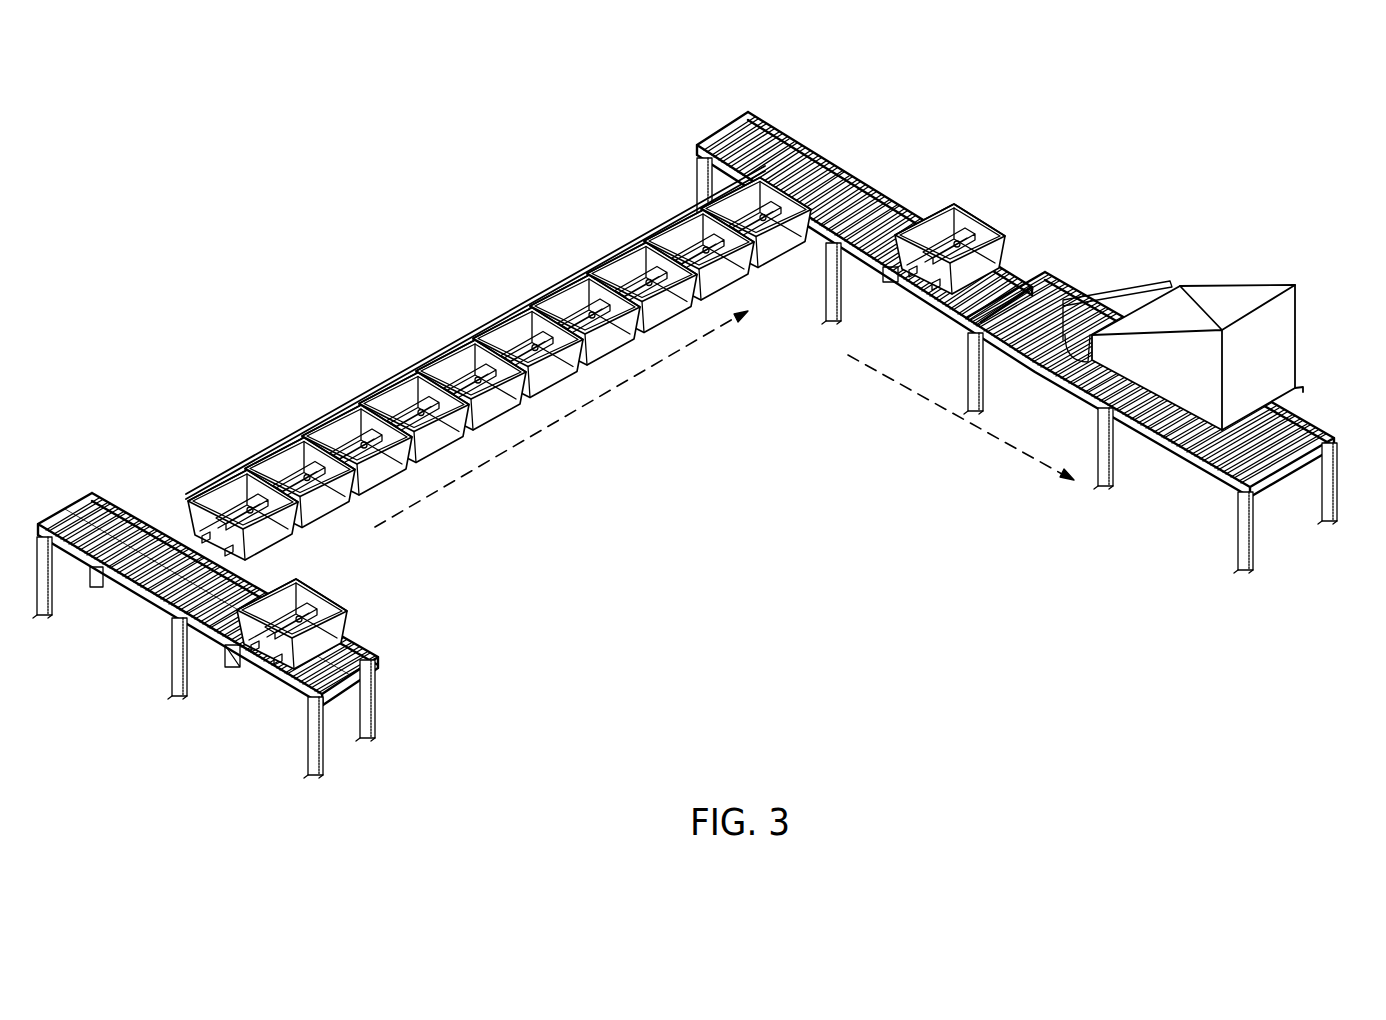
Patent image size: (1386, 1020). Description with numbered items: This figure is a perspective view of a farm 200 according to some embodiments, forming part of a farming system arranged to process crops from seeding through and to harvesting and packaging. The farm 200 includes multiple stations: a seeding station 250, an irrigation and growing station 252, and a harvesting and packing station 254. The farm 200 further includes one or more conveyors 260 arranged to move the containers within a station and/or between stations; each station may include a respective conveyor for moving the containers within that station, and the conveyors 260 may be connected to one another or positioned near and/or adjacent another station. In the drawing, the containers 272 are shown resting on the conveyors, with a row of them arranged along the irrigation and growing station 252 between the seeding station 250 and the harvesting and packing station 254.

The farm 200 is at (703, 445).
The seeding station 250 is at (229, 681).
The irrigation and growing station 252 is at (462, 324).
The harvesting and packing station 254 is at (1092, 270).
The conveyors 260 is at (120, 511).
The containers 272 is at (576, 245).